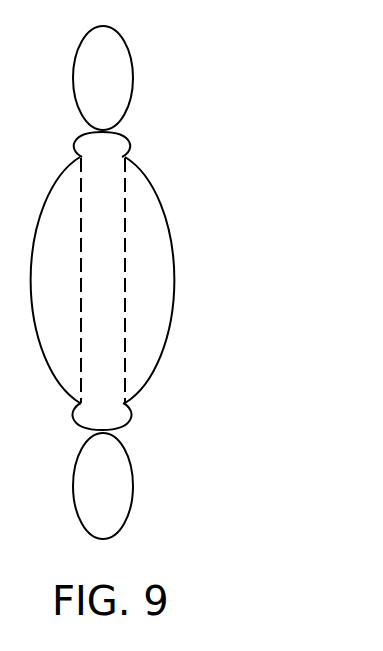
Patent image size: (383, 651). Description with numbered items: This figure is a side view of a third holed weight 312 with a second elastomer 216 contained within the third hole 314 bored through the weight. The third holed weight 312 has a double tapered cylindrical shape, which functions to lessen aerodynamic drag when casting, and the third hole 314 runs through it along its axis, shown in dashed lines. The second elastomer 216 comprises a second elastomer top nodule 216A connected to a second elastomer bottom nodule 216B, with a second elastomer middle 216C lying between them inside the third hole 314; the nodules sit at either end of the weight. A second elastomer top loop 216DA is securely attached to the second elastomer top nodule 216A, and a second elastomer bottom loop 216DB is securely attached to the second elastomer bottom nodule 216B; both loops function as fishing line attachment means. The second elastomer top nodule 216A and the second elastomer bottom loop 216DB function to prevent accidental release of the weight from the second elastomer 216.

The second elastomer 216 is at (164, 282).
The second elastomer top loop 216DA is at (130, 50).
The second elastomer top nodule 216A is at (132, 145).
The third holed weight 312 is at (168, 222).
The third hole 314 is at (125, 293).
The second elastomer middle 216C is at (113, 358).
The second elastomer bottom nodule 216B is at (132, 421).
The second elastomer bottom loop 216DB is at (130, 507).